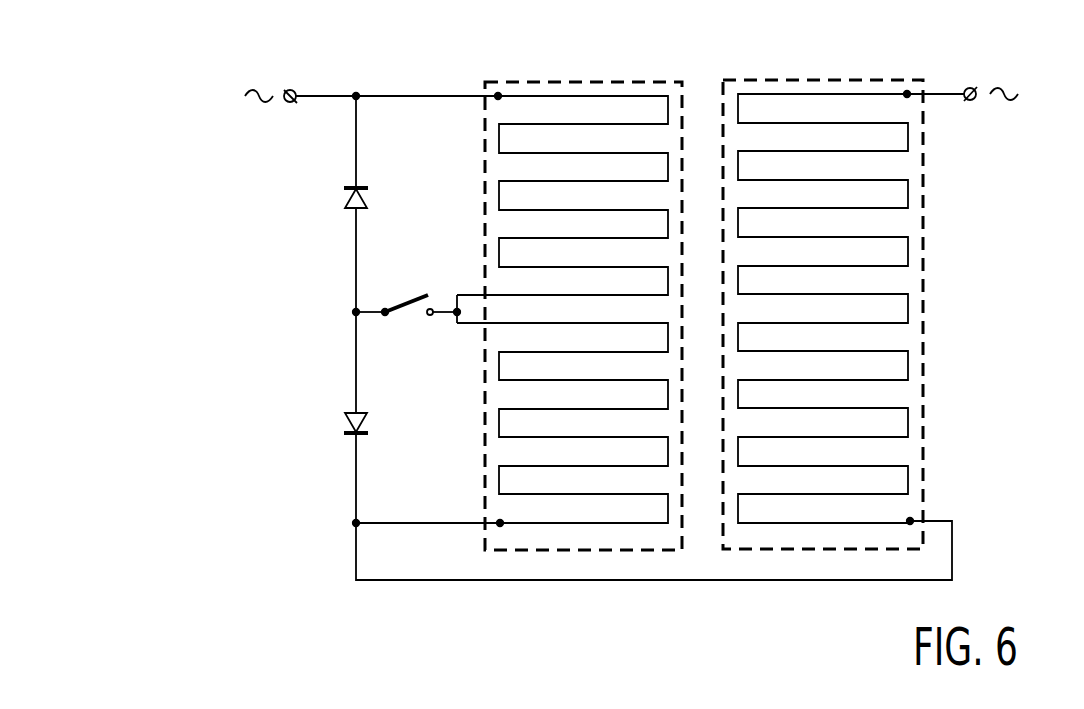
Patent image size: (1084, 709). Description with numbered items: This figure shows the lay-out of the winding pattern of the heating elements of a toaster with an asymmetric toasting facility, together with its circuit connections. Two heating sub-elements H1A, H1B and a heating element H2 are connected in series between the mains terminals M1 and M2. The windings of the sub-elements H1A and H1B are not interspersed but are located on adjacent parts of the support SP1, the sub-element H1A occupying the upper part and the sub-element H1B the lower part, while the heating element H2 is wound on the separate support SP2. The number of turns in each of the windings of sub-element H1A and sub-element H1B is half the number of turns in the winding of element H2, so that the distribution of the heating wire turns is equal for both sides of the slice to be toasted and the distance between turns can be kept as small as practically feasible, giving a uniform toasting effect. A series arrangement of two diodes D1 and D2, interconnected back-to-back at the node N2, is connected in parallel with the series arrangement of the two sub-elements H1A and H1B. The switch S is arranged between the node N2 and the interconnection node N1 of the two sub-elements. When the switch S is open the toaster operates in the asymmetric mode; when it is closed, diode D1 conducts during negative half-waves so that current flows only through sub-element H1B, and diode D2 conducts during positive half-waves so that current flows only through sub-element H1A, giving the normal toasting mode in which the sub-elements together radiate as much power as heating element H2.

The terminal M1 is at (290, 89).
The terminal M2 is at (969, 87).
The diode D1 is at (345, 201).
The diode D2 is at (345, 421).
The interconnection node N1 is at (352, 312).
The node N2 is at (452, 320).
The switch S is at (407, 312).
The heating sub-element H1A is at (543, 183).
The heating sub-element H1B is at (545, 410).
The heating element H2 is at (910, 250).
The support SP1 is at (571, 553).
The support SP2 is at (842, 552).